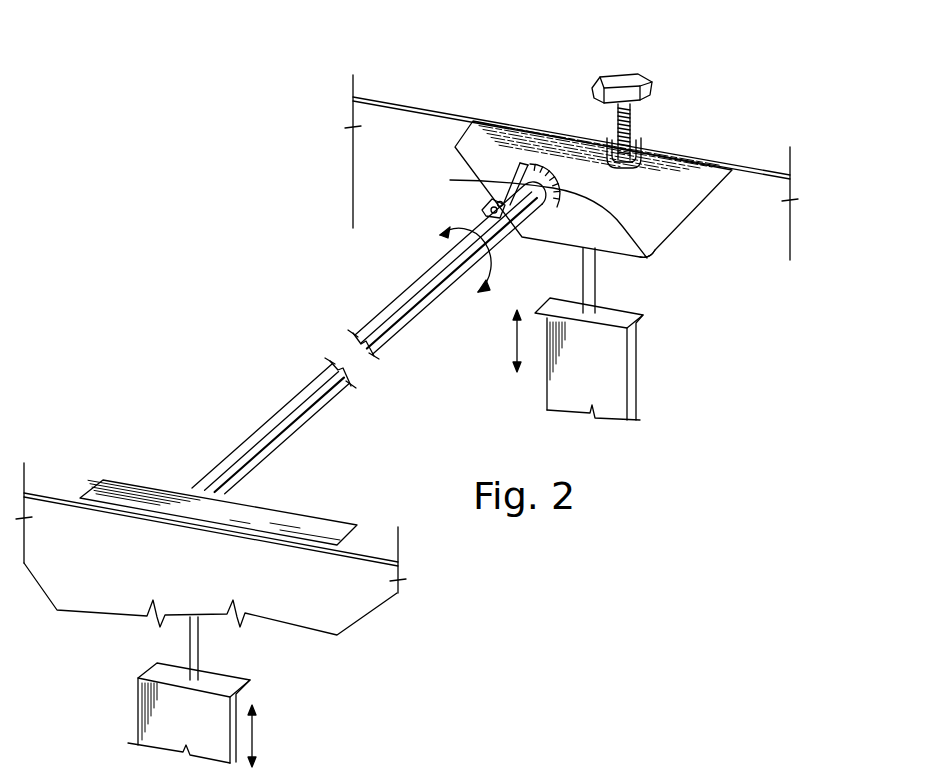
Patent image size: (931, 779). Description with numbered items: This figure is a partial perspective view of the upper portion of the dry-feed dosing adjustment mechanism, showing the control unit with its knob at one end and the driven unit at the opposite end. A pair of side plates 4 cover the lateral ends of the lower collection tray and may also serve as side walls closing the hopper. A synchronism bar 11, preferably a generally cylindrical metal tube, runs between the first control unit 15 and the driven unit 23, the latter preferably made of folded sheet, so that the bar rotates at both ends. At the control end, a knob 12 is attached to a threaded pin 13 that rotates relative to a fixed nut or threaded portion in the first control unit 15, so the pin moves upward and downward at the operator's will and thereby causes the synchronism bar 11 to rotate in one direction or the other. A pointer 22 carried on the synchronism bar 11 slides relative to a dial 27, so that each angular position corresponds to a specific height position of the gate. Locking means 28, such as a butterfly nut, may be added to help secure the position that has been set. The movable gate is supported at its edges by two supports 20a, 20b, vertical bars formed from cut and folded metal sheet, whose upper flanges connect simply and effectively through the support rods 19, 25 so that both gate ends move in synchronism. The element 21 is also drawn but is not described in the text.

The side plate 4 is at (392, 154).
The synchronism bar 11 is at (365, 305).
The knob 12 is at (633, 80).
The threaded pin 13 is at (627, 130).
The first control unit 15 is at (538, 122).
The support rod 19 is at (593, 275).
The support 20a is at (572, 381).
The support 20b is at (207, 737).
The support 21 is at (512, 772).
The pointer 22 is at (478, 182).
The driven unit 23 is at (138, 477).
The support rod 25 is at (193, 633).
The dial 27 is at (640, 257).
The locking means 28 is at (530, 163).